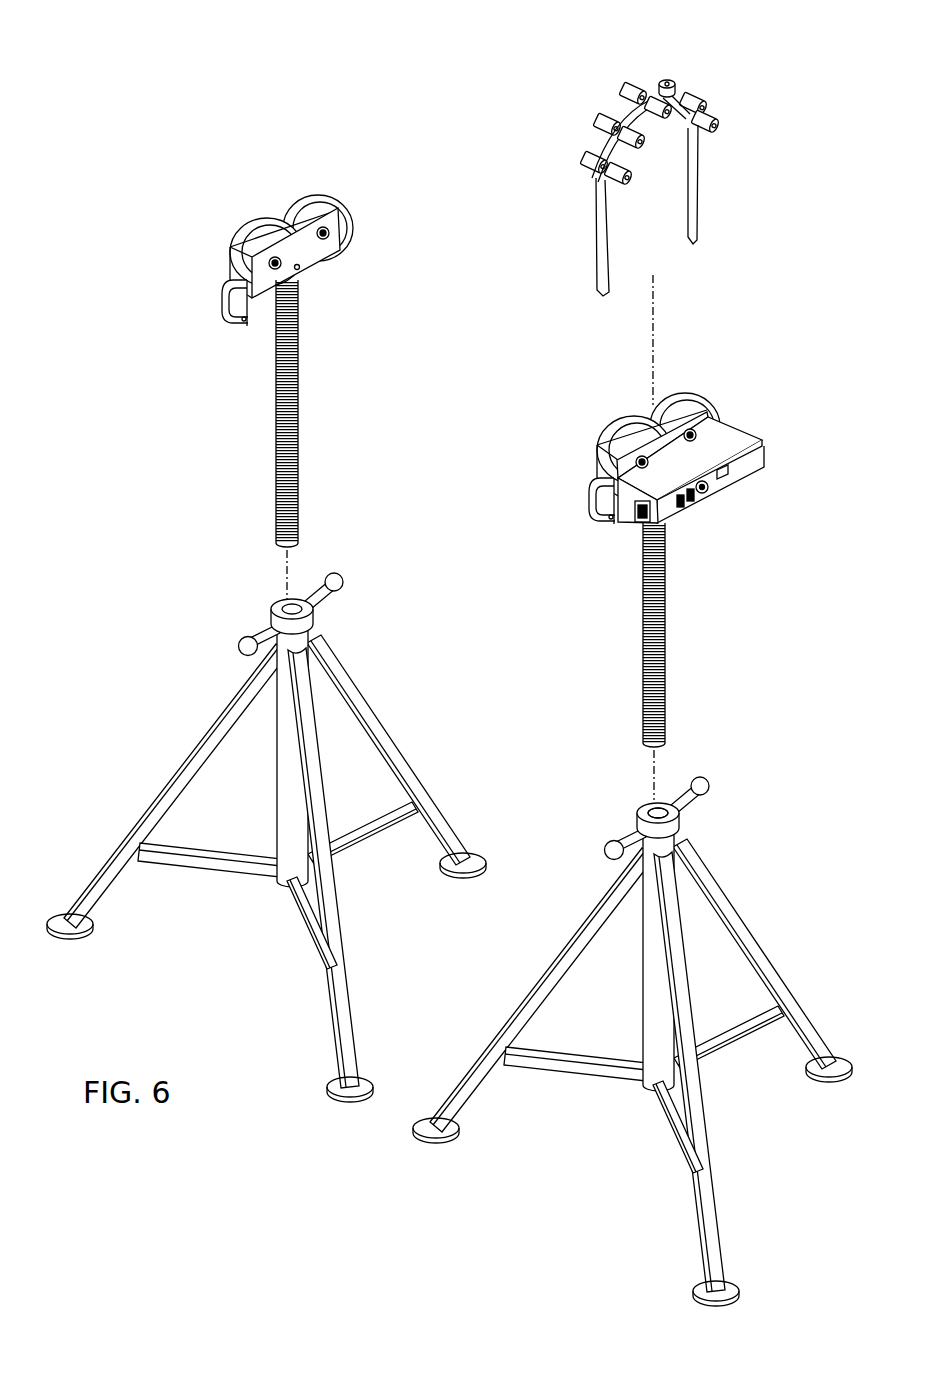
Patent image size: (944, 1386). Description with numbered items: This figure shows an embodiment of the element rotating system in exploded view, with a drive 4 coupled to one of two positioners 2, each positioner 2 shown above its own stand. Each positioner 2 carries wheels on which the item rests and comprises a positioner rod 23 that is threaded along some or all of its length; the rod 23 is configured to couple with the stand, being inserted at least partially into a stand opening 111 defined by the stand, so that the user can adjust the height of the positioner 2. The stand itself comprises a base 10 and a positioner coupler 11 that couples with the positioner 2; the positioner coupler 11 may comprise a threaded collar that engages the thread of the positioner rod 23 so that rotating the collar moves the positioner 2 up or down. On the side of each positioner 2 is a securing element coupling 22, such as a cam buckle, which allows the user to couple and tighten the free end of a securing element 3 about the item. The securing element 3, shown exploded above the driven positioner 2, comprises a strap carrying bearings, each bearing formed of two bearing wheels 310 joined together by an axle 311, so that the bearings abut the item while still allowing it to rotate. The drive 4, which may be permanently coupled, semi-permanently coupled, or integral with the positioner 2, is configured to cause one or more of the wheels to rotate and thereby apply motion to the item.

The positioner 2 is at (272, 208).
The securing element 3 is at (614, 202).
The drive 4 is at (682, 463).
The base 10 is at (192, 749).
The positioner coupler 11 is at (276, 604).
The securing element coupling 22 is at (237, 295).
The positioner rod 23 is at (277, 382).
The stand opening 111 is at (659, 810).
The bearing wheels 310 is at (668, 80).
The axle 311 is at (595, 175).